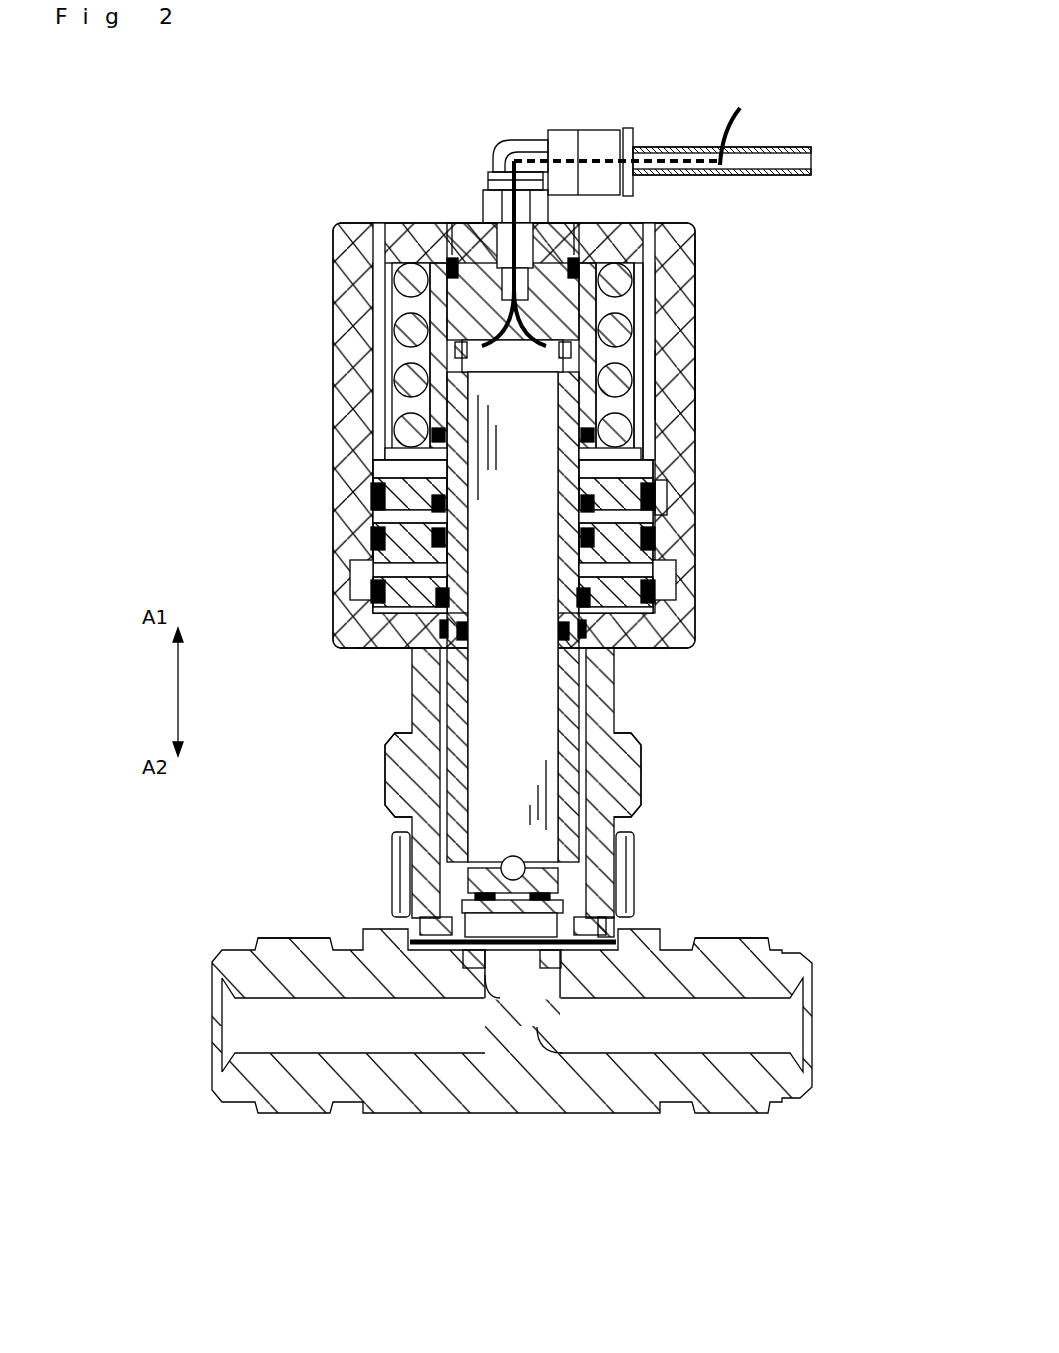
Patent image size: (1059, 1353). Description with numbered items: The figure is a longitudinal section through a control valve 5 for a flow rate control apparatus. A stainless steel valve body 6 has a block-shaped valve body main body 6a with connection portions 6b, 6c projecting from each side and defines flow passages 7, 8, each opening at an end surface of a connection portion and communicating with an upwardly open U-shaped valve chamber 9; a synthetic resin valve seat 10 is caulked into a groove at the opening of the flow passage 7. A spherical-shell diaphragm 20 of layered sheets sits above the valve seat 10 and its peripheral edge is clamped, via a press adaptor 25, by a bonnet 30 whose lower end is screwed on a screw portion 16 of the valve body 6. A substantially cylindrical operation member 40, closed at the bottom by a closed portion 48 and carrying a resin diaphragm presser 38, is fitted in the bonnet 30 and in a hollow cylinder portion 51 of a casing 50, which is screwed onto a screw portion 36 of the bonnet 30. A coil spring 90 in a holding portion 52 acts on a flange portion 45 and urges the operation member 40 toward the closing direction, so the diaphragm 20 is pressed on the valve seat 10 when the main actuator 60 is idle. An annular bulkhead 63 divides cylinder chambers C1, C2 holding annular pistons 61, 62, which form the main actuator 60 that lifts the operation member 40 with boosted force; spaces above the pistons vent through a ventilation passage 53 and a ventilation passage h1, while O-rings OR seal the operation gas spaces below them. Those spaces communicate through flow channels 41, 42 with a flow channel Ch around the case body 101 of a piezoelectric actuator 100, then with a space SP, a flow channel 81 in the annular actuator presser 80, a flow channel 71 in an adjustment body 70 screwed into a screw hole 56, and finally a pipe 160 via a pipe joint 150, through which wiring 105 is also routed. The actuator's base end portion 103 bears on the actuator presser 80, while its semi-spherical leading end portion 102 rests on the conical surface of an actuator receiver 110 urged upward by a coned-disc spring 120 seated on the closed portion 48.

The control valve 5 is at (534, 1036).
The valve body 6 is at (534, 1036).
The valve body main body 6a is at (520, 1060).
The connection portion 6b is at (270, 972).
The connection portion 6c is at (745, 965).
The flow passage 7 is at (408, 1030).
The flow passage 8 is at (700, 1030).
The valve chamber 9 is at (470, 968).
The valve seat 10 is at (552, 968).
The screw portion 16 is at (562, 905).
The diaphragm 20 is at (602, 942).
The press adaptor 25 is at (420, 926).
The bonnet 30 is at (616, 720).
The screw portion 36 is at (676, 576).
The diaphragm presser 38 is at (532, 950).
The operation member 40 is at (388, 770).
The flow channel 41 is at (388, 466).
The flow channel 42 is at (430, 646).
The flange portion 45 is at (392, 450).
The closed portion 48 is at (493, 1000).
The casing 50 is at (693, 350).
The hollow cylinder portion 51 is at (696, 362).
The holding portion 52 is at (694, 338).
The ventilation passage 53 is at (378, 236).
The screw hole 56 is at (632, 292).
The main actuator 60 is at (380, 498).
The piston 61 is at (376, 506).
The piston 62 is at (377, 600).
The bulkhead 63 is at (668, 520).
The adjustment body 70 is at (452, 222).
The flow channel 71 is at (494, 224).
The actuator presser 80 is at (430, 296).
The flow channel 81 is at (641, 322).
The coil spring 90 is at (694, 306).
The piezoelectric actuator 100 is at (580, 432).
The case body 101 is at (522, 712).
The leading end portion 102 is at (524, 862).
The base end portion 103 is at (445, 266).
The wiring 105 is at (722, 128).
The actuator receiver 110 is at (396, 860).
The coned-disc spring 120 is at (470, 886).
The pipe joint 150 is at (578, 128).
The pipe 160 is at (762, 150).
The O-ring OR is at (582, 266).
The space SP is at (400, 322).
The flow channel Ch is at (656, 382).
The cylinder chamber C1 is at (378, 536).
The cylinder chamber C2 is at (438, 630).
The ventilation passage h1 is at (355, 570).